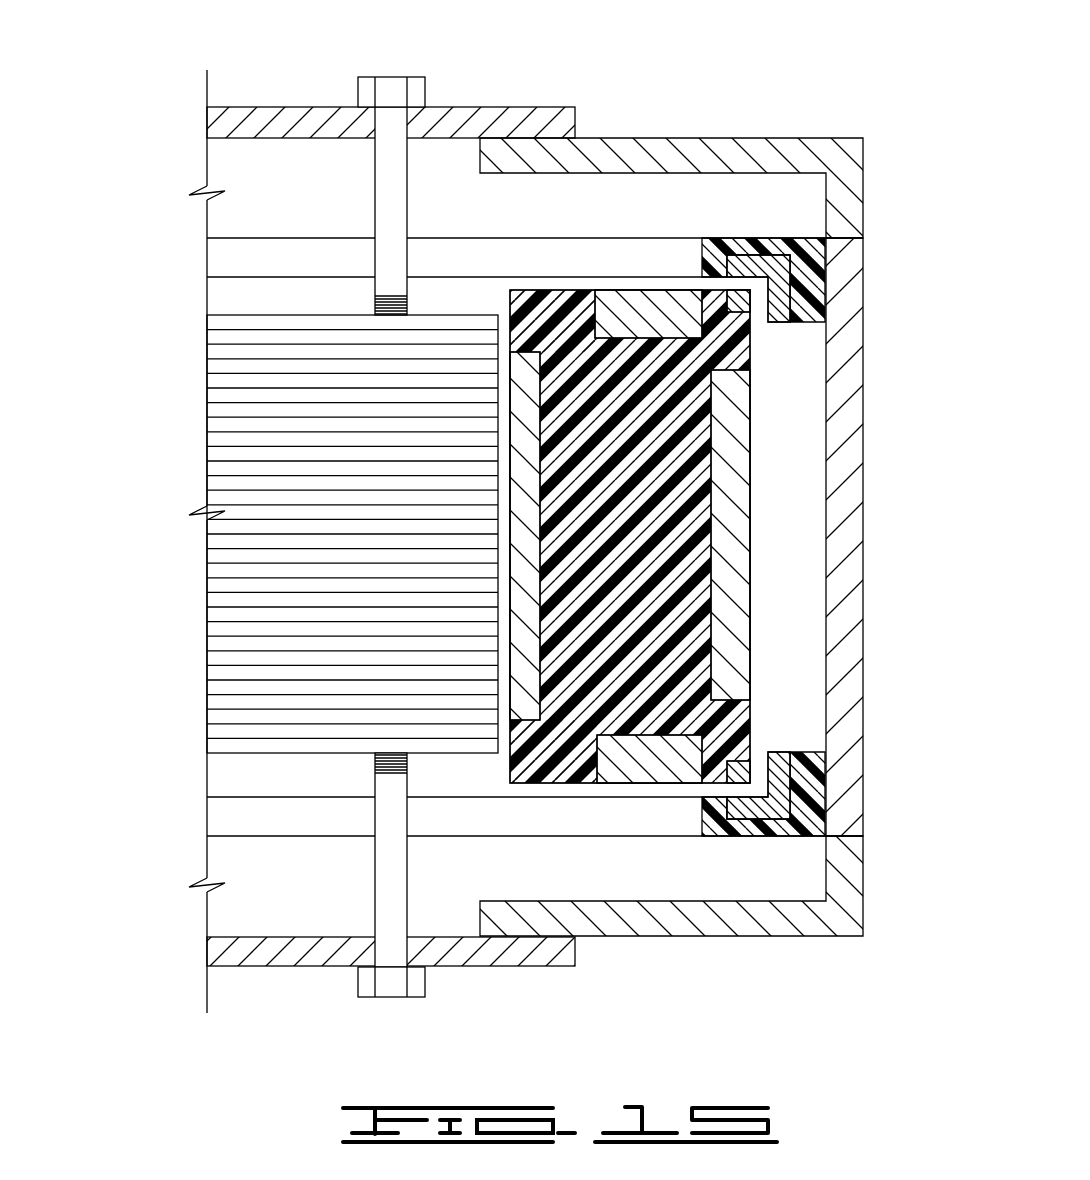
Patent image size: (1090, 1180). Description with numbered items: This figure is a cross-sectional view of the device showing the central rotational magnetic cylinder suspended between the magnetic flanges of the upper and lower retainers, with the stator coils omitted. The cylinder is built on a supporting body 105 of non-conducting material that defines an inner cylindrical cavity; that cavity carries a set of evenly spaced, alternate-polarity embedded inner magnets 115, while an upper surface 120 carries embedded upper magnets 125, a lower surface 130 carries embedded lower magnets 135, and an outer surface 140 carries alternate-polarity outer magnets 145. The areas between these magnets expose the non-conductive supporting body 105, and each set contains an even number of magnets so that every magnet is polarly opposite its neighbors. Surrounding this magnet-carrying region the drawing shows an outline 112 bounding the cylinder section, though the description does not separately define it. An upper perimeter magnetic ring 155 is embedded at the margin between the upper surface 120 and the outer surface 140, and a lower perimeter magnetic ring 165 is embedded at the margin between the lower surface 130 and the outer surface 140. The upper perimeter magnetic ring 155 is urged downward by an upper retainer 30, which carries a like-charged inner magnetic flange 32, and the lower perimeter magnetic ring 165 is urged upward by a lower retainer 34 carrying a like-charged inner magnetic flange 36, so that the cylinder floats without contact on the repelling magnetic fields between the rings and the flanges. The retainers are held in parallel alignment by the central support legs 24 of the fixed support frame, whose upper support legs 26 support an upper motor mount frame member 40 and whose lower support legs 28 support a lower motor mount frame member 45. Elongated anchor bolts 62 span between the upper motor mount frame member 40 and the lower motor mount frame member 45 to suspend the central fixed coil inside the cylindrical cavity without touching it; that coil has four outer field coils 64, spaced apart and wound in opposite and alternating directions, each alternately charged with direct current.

The central support legs 24 is at (863, 637).
The upper support legs 26 is at (745, 138).
The lower support legs 28 is at (800, 937).
The upper retainer 30 is at (817, 263).
The inner magnetic flange 32 is at (768, 258).
The lower retainer 34 is at (808, 826).
The inner magnetic flange 36 is at (780, 786).
The upper motor mount frame member 40 is at (505, 107).
The lower motor mount frame member 45 is at (540, 966).
The elongated anchor bolts 62 is at (368, 78).
The outer field coils 64 is at (233, 442).
The supporting body 105 is at (690, 582).
The insulation enclosure 112 is at (507, 298).
The inner magnets 115 is at (515, 637).
The upper surface 120 is at (545, 292).
The upper magnets 125 is at (640, 303).
The lower surface 130 is at (545, 785).
The lower magnets 135 is at (632, 770).
The outer surface 140 is at (745, 440).
The outer magnets 145 is at (755, 505).
The upper perimeter magnetic ring 155 is at (752, 343).
The lower perimeter magnetic ring 165 is at (778, 752).